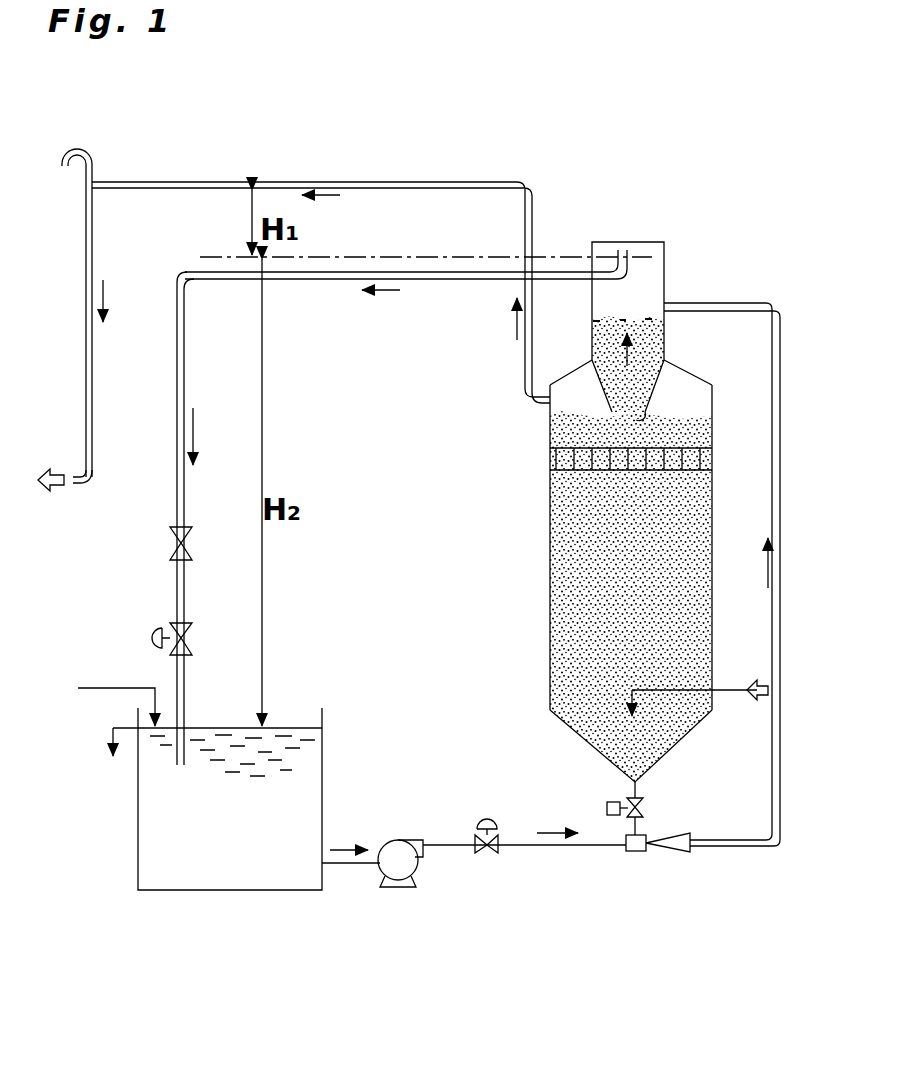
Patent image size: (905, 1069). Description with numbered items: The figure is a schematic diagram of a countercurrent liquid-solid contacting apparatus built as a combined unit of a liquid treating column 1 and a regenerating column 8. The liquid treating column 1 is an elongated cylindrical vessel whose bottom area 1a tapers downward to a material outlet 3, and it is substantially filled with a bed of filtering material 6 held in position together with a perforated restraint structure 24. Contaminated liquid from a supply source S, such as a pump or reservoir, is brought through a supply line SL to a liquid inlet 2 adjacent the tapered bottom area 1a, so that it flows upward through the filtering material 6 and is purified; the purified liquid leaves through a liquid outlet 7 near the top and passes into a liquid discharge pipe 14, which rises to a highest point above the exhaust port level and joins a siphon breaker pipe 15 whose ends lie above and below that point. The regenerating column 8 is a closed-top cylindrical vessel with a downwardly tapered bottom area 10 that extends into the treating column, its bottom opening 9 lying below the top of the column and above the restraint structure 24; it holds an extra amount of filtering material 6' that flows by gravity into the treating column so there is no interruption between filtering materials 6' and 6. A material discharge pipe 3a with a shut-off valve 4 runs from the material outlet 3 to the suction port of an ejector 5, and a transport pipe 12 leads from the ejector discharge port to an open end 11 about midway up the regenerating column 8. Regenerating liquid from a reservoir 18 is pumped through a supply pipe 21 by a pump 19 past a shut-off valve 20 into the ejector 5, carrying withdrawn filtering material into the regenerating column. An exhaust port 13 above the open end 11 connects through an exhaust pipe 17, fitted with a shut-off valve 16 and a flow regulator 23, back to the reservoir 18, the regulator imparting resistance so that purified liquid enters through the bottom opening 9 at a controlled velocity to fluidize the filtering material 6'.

The liquid treating column 1 is at (550, 563).
The bottom area 1a is at (683, 743).
The liquid inlet 2 is at (632, 705).
The material outlet 3 is at (638, 786).
The material discharge pipe 3a is at (648, 833).
The shut-off valve 4 is at (607, 808).
The ejector 5 is at (633, 851).
The filtering material 6 is at (653, 596).
The filtering material 6' is at (670, 364).
The liquid outlet 7 is at (552, 400).
The regenerating column 8 is at (665, 275).
The bottom opening 9 is at (640, 420).
The downwardly tapered bottom area 10 is at (655, 385).
The open end 11 is at (652, 318).
The transport pipe 12 is at (772, 640).
The exhaust port 13 is at (623, 251).
The liquid discharge pipe 14 is at (526, 358).
The siphon breaker pipe 15 is at (90, 162).
The shut-off valve 16 is at (160, 643).
The exhaust pipe 17 is at (178, 455).
The reservoir 18 is at (138, 824).
The pump 19 is at (400, 840).
The shut-off valve 20 is at (487, 820).
The supply pipe 21 is at (540, 847).
The flow regulator 23 is at (178, 538).
The perforated restraint structure 24 is at (572, 466).
The supply source S is at (757, 680).
The supply line SL is at (757, 700).